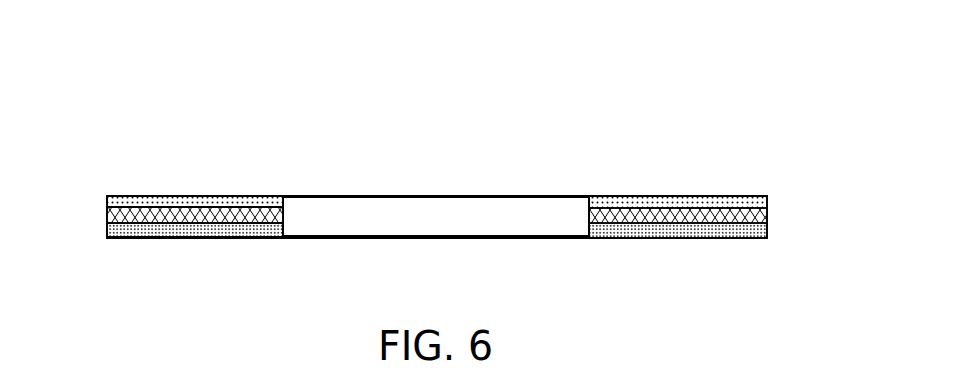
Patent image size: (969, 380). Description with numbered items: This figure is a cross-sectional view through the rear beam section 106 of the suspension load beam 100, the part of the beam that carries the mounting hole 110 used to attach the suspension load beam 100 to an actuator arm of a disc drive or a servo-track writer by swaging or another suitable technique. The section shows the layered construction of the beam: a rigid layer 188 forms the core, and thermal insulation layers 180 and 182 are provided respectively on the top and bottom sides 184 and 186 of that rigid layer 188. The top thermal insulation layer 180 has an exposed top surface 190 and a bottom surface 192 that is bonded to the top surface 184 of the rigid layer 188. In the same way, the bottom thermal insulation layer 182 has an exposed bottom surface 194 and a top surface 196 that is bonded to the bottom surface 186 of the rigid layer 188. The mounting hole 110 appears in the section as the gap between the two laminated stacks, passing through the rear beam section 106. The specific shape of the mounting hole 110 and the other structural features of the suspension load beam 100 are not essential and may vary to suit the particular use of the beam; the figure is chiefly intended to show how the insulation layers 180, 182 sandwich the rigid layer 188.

The suspension load beam 100 is at (629, 102).
The mounting hole 110 is at (385, 203).
The rear beam section 106 is at (602, 195).
The top thermal insulation layer 180 is at (713, 202).
The bottom thermal insulation layer 182 is at (667, 230).
The rigid layer 188 is at (767, 217).
The exposed top surface 190 is at (203, 188).
The bottom surface 192 is at (204, 226).
The exposed bottom surface 194 is at (126, 246).
The top surface 196 is at (127, 210).
The top side 184 is at (245, 199).
The bottom side 186 is at (245, 232).